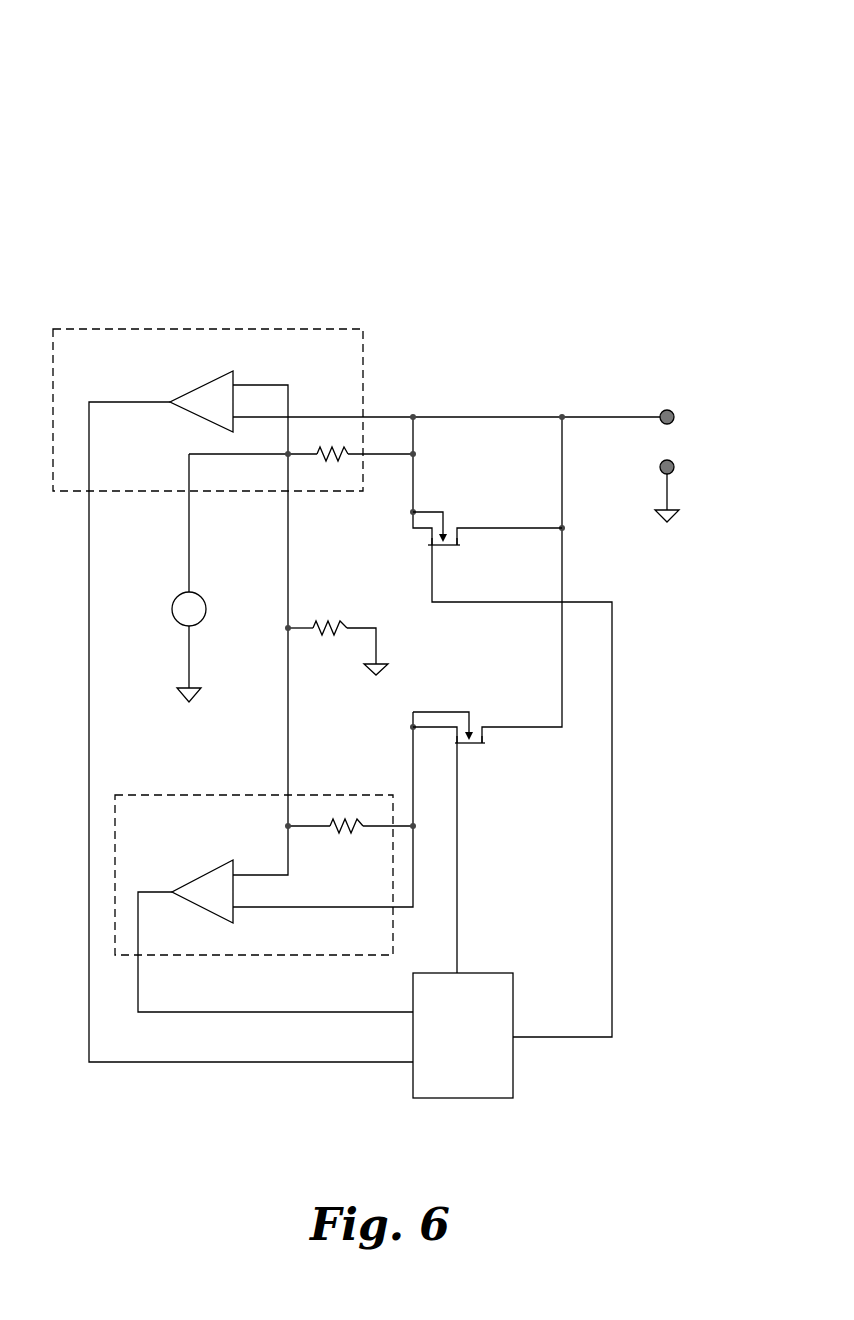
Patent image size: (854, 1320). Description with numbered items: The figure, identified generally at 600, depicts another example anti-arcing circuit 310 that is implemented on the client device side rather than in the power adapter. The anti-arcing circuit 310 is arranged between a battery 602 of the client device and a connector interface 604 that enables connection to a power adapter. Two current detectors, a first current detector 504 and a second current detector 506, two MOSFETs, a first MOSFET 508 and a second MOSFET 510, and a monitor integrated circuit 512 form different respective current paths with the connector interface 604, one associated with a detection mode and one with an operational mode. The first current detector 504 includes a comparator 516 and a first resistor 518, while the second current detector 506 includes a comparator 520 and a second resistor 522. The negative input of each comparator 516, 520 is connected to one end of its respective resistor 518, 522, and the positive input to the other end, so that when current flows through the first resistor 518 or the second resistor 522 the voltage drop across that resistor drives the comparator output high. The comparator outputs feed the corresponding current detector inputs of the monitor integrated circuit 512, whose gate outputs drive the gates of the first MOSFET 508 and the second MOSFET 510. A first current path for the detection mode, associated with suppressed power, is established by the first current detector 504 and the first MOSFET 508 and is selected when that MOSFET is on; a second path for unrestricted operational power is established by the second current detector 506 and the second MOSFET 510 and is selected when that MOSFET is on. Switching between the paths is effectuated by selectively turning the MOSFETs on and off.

The protection circuit system 600 is at (100, 56).
The anti-arcing circuit 310 is at (357, 268).
The current detector CD2 506 is at (151, 293).
The comparator 520 is at (132, 388).
The resistor R2 522 is at (321, 447).
The MOSFET Q2 510 is at (439, 409).
The connector interface 604 is at (657, 388).
The battery 602 is at (117, 591).
The MOSFET Q1 508 is at (441, 691).
The current detector CD1 504 is at (162, 768).
The comparator 516 is at (167, 866).
The resistor R1 518 is at (331, 881).
The monitor integrated circuit 512 is at (466, 966).